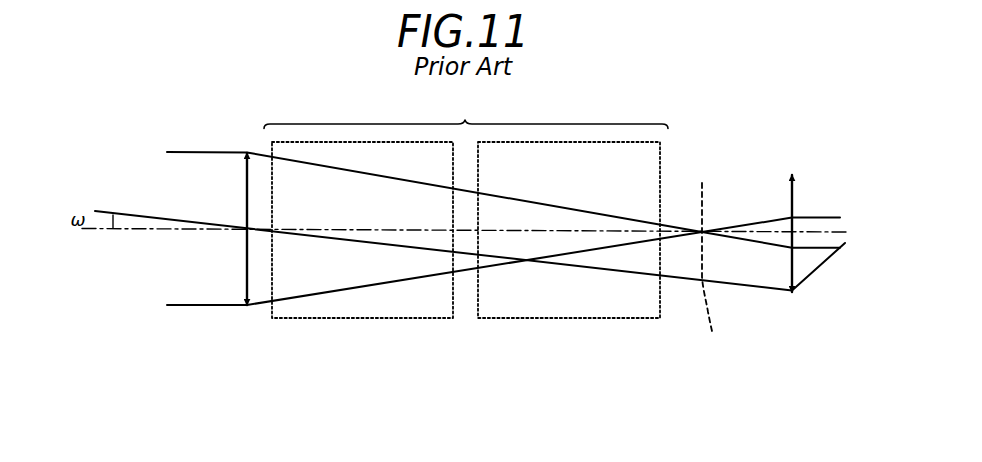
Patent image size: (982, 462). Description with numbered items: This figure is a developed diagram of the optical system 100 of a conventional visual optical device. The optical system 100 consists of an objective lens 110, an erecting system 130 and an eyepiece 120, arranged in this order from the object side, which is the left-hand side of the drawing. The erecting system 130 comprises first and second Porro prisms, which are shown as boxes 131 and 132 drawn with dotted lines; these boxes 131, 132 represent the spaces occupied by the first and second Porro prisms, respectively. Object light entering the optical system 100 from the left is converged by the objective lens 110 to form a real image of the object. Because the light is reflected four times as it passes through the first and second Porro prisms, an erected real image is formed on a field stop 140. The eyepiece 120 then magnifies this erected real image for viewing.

The optical system 100 is at (745, 145).
The objective lens 110 is at (245, 255).
The eyepiece 120 is at (793, 202).
The erecting system 130 is at (466, 113).
The first Porro prism box 131 is at (364, 318).
The second Porro prism box 132 is at (572, 318).
The field stop 140 is at (702, 197).